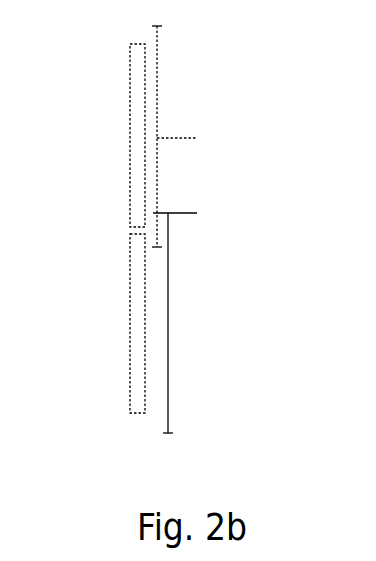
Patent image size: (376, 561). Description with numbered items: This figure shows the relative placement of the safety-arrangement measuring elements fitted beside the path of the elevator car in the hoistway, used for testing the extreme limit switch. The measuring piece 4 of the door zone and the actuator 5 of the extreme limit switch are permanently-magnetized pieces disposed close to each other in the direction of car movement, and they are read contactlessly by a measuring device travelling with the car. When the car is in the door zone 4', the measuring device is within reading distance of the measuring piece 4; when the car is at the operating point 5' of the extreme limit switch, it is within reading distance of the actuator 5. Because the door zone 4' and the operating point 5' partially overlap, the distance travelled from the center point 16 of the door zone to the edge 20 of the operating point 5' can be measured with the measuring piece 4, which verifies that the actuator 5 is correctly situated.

The measuring piece of the door zone 4 is at (83, 135).
The door zone 4' is at (236, 130).
The actuator of the extreme limit switch 5 is at (83, 323).
The operating point of the extreme limit switch 5' is at (220, 323).
The center point of the door zone 16 is at (197, 100).
The edge of the operating point 20 is at (192, 182).